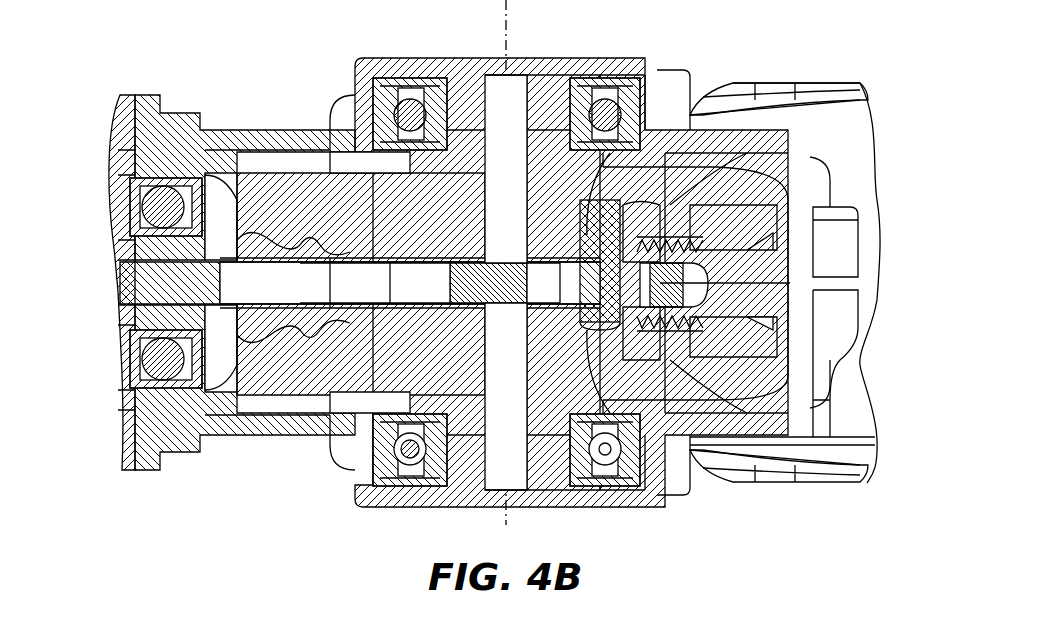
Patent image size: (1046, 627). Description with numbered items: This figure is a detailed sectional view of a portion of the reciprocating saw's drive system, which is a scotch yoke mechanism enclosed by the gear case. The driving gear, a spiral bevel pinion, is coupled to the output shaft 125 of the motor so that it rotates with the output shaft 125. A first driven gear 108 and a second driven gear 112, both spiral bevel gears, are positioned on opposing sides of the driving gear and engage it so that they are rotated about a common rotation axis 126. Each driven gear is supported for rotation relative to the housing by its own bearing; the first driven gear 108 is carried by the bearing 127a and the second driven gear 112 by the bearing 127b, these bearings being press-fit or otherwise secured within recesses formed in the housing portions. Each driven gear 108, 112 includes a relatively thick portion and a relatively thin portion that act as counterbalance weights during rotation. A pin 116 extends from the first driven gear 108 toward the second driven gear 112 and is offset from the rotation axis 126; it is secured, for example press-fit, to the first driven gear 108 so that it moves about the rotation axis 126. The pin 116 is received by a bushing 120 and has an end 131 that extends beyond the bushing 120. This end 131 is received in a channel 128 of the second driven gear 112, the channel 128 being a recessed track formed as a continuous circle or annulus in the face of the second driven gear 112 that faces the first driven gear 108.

The first driven gear 108 is at (262, 195).
The second driven gear 112 is at (243, 340).
The pin 116 is at (662, 395).
The bushing 120 is at (658, 285).
The output shaft 125 is at (118, 282).
The rotation axis 126 is at (512, 36).
The bearing 127a is at (440, 100).
The bearing 127b is at (438, 472).
The channel 128 is at (335, 430).
The end 131 is at (606, 452).